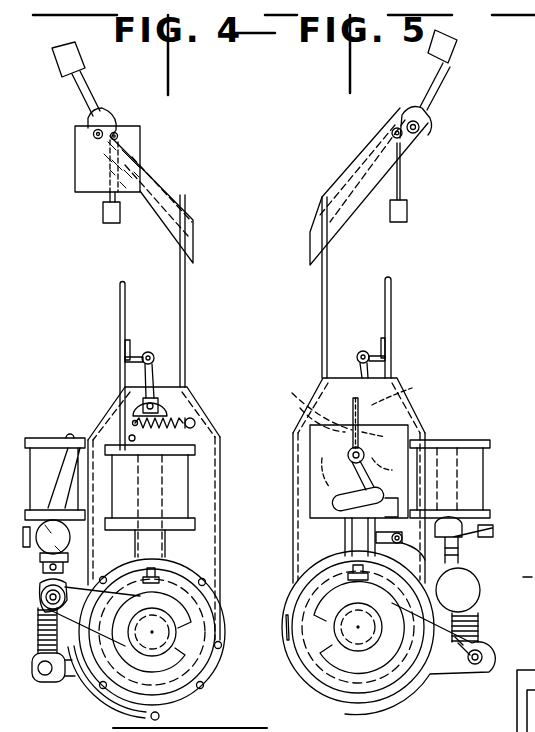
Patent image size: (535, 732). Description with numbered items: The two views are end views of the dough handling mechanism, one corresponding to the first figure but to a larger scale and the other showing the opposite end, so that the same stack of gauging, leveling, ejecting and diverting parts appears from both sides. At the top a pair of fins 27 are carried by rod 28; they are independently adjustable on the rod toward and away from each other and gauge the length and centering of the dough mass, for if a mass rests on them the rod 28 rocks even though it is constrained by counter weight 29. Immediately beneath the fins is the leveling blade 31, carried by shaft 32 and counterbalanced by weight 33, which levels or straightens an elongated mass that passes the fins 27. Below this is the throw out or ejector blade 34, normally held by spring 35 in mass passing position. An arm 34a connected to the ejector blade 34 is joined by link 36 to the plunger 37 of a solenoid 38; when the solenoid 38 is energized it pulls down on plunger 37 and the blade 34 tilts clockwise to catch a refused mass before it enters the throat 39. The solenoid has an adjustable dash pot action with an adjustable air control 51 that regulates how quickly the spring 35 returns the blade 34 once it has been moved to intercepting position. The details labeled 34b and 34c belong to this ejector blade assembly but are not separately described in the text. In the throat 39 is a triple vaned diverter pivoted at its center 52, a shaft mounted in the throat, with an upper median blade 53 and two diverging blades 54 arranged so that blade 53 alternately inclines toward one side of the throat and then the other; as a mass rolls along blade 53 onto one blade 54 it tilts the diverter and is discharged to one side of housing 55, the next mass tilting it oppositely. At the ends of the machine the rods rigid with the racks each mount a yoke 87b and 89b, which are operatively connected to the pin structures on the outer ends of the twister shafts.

In FIG. 4, the fins 27 is at (181, 190).
In FIG. 5, the fins 27 is at (342, 177).
In FIG. 4, the rod 28 is at (153, 122).
In FIG. 5, the rod 28 is at (393, 130).
In FIG. 4, the counter weight 29 is at (103, 214).
In FIG. 5, the counter weight 29 is at (407, 212).
In FIG. 4, the leveling blade 31 is at (161, 226).
In FIG. 5, the leveling blade 31 is at (353, 213).
In FIG. 4, the shaft 32 is at (182, 118).
In FIG. 5, the shaft 32 is at (428, 130).
In FIG. 4, the weight 33 is at (65, 66).
In FIG. 5, the weight 33 is at (452, 52).
In FIG. 4, the ejector blade 34 is at (120, 300).
In FIG. 5, the ejector blade 34 is at (392, 310).
In FIG. 4, the arm 34a is at (145, 351).
In FIG. 5, the arm 34a is at (365, 350).
In FIG. 4, the arc path 34b is at (123, 407).
In FIG. 5, the arc path 34b is at (405, 395).
In FIG. 4, the pin 34c is at (128, 438).
In FIG. 5, the pin 34c is at (305, 414).
In FIG. 4, the spring 35 is at (172, 416).
In FIG. 4, the link 36 is at (152, 372).
In FIG. 4, the plunger 37 is at (196, 431).
In FIG. 4, the solenoid 38 is at (180, 493).
In FIG. 4, the throat 39 is at (190, 410).
In FIG. 5, the throat 39 is at (372, 407).
In FIG. 4, the adjustable air control 51 is at (165, 573).
In FIG. 5, the adjustable air control 51 is at (352, 568).
In FIG. 5, the center 52 is at (360, 453).
In FIG. 5, the upper median blade 53 is at (308, 392).
In FIG. 5, the diverging blades 54 is at (364, 463).
In FIG. 4, the housing 55 is at (221, 530).
In FIG. 5, the housing 55 is at (290, 452).
In FIG. 4, the yoke 87b is at (72, 590).
In FIG. 4, the yoke 89b is at (62, 690).
In FIG. 5, the yoke 89b is at (435, 652).